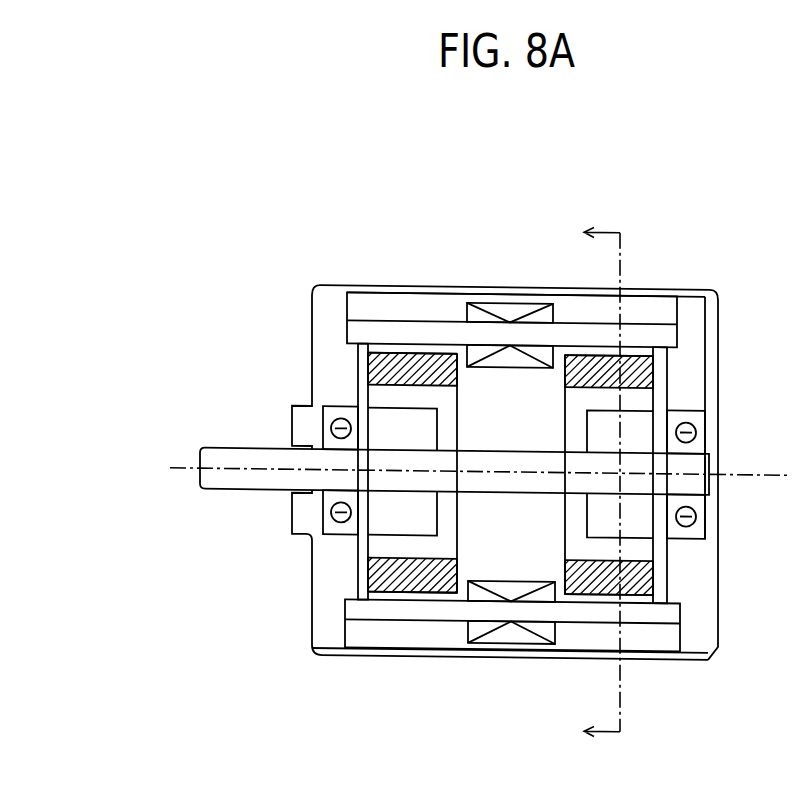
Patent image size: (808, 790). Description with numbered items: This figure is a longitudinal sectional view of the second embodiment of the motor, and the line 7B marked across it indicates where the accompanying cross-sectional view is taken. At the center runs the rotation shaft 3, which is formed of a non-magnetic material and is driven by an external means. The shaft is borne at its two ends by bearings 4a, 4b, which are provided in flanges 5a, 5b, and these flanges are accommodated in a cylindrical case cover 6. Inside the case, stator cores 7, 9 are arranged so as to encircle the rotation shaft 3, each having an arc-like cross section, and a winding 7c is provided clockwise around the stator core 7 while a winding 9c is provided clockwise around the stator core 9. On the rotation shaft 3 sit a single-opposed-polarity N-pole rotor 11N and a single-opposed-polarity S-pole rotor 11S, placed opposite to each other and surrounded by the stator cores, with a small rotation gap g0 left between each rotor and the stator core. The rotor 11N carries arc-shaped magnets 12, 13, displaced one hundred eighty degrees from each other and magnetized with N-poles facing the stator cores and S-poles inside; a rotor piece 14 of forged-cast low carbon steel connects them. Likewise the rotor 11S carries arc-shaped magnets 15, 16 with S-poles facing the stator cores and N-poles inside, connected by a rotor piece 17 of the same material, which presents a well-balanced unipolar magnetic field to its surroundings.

The rotation shaft 3 is at (245, 455).
The bearing 4a is at (325, 412).
The bearing 4b is at (683, 408).
The flange 5a is at (325, 303).
The flange 5b is at (700, 633).
The cylindrical case cover 6 is at (432, 288).
The stator core 7 is at (408, 328).
The winding 7c is at (495, 303).
The stator core 9 is at (418, 612).
The winding 9c is at (505, 635).
The single-opposed-polarity S-pole rotor 11S is at (472, 430).
The single-opposed-polarity N-pole rotor 11N is at (554, 533).
The arc-shaped magnet 12 is at (633, 358).
The arc-shaped magnet 13 is at (632, 585).
The rotor piece 14 is at (642, 398).
The arc-shaped magnet 15 is at (390, 365).
The arc-shaped magnet 16 is at (382, 591).
The rotor piece 17 is at (380, 394).
The section line 7B-7B' 7B is at (636, 747).
The rotation gap g0 is at (322, 673).